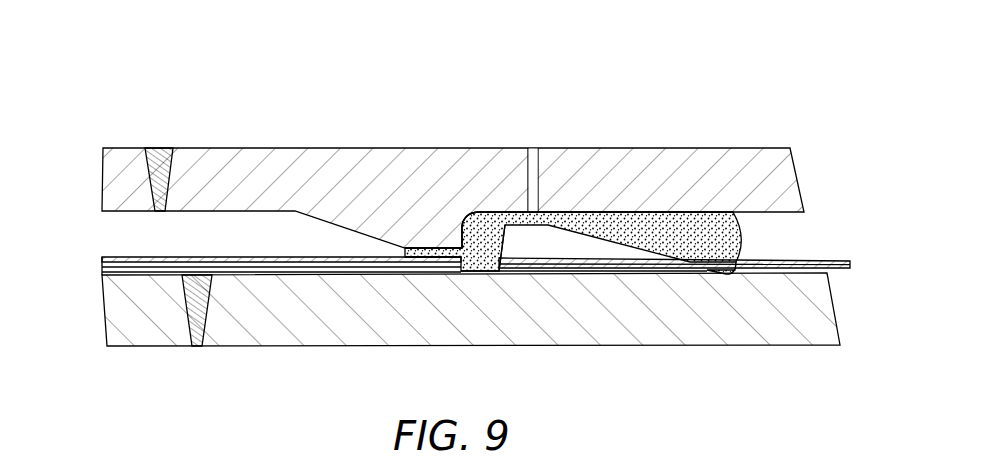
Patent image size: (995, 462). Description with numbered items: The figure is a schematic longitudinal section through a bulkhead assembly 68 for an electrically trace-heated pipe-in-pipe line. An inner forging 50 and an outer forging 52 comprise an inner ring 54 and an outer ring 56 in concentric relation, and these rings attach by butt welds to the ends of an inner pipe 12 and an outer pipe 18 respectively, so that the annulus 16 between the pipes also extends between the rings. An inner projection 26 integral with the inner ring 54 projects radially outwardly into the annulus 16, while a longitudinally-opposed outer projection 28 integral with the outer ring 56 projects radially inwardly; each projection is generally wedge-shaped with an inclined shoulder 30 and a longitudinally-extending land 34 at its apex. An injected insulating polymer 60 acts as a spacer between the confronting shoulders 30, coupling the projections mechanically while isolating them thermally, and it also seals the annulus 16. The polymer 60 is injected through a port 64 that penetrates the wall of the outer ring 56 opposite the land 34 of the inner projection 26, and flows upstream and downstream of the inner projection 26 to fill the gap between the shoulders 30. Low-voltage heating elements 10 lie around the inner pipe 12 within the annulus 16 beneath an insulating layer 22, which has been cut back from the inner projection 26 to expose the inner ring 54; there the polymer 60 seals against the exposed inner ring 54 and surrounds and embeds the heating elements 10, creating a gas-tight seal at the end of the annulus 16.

The heating elements 10 is at (835, 262).
The inner pipe 12 is at (110, 308).
The annulus 16 is at (108, 237).
The outer pipe 18 is at (105, 183).
The insulating layer 22 is at (283, 272).
The inner projection 26 is at (548, 235).
The outer projection 28 is at (410, 228).
The inclined shoulder 30 is at (463, 235).
The land 34 is at (520, 205).
The inner forging 50 is at (808, 353).
The outer forging 52 is at (783, 135).
The inner ring 54 is at (655, 312).
The outer ring 56 is at (708, 195).
The injected insulating polymer 60 is at (480, 250).
The port 64 is at (534, 155).
The bulkhead assembly 68 is at (110, 112).